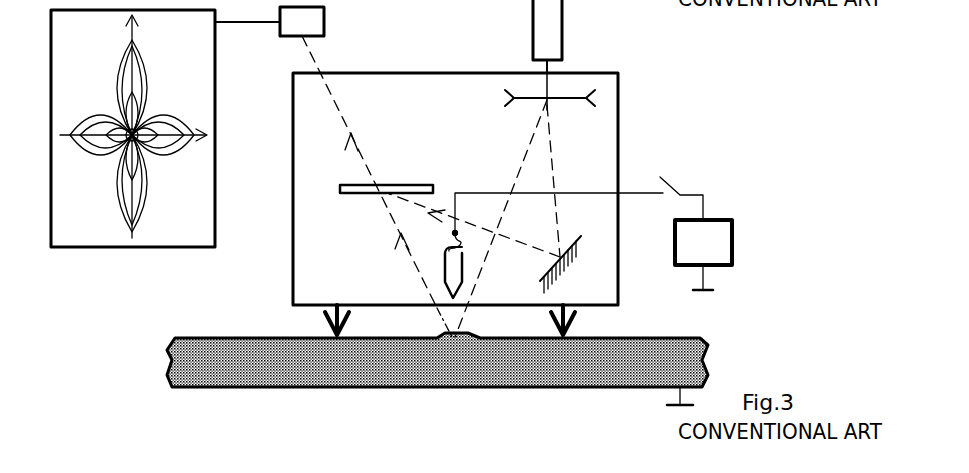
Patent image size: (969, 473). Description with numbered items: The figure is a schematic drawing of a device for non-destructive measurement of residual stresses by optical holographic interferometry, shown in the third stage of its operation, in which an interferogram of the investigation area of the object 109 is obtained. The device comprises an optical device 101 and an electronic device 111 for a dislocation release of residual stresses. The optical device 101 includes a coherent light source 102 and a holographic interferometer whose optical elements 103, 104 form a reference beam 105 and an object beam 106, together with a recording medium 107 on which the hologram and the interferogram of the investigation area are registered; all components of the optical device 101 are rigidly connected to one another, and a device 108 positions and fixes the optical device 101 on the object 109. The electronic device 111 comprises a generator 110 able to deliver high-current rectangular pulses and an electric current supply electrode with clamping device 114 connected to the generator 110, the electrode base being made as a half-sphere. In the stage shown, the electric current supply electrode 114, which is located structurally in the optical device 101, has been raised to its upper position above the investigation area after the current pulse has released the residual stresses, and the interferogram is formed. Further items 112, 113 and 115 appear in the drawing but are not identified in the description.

The optical device 101 is at (600, 172).
The coherent light source 102 is at (569, 36).
The optical element 103 is at (528, 92).
The optical element 104 is at (576, 266).
The reference beam 105 is at (558, 214).
The object beam 106 is at (431, 186).
The recording medium 107 is at (368, 195).
The device for positioning and fixation 108 is at (456, 321).
The object 109 is at (437, 369).
The generator 110 is at (696, 233).
The electronic device for dislocation release of residual stresses 111 is at (732, 225).
The TV camera 112 is at (291, 35).
The display 113 is at (133, 128).
The electric current supply electrode 114 is at (437, 266).
The radiation pattern 115 is at (132, 136).